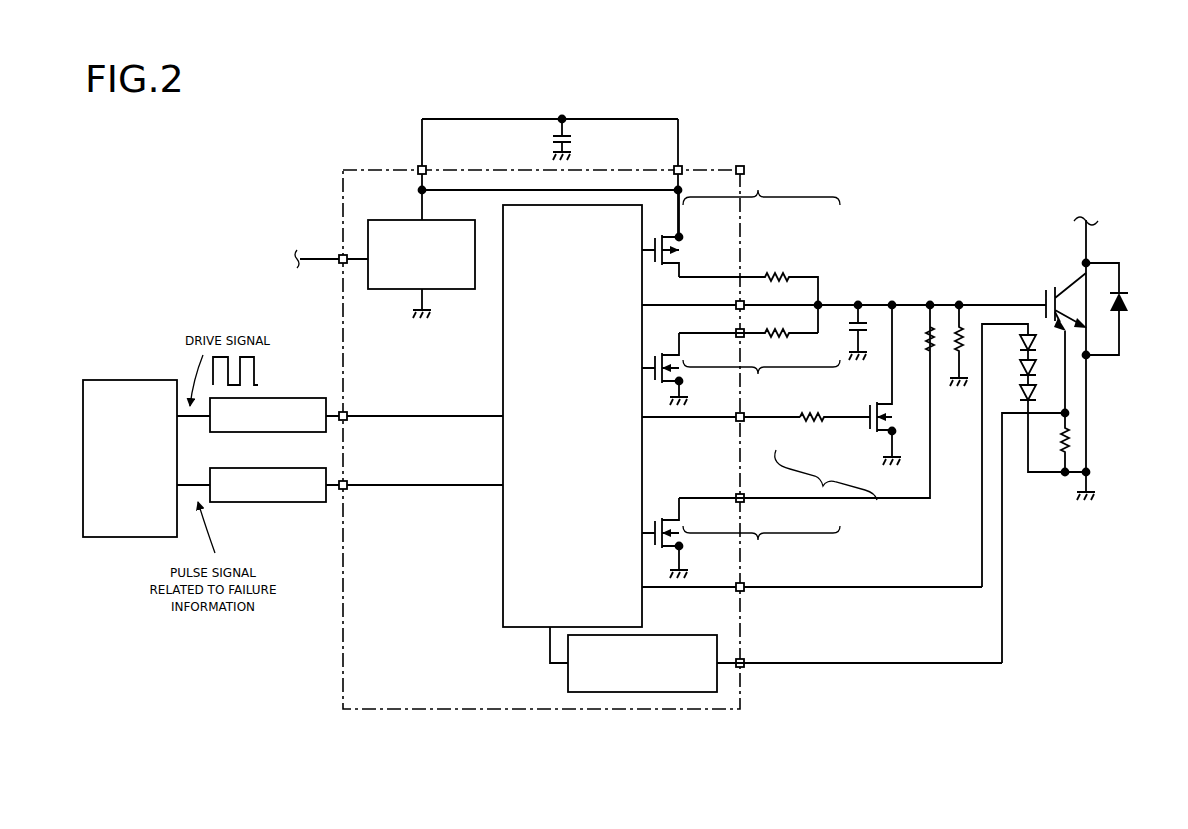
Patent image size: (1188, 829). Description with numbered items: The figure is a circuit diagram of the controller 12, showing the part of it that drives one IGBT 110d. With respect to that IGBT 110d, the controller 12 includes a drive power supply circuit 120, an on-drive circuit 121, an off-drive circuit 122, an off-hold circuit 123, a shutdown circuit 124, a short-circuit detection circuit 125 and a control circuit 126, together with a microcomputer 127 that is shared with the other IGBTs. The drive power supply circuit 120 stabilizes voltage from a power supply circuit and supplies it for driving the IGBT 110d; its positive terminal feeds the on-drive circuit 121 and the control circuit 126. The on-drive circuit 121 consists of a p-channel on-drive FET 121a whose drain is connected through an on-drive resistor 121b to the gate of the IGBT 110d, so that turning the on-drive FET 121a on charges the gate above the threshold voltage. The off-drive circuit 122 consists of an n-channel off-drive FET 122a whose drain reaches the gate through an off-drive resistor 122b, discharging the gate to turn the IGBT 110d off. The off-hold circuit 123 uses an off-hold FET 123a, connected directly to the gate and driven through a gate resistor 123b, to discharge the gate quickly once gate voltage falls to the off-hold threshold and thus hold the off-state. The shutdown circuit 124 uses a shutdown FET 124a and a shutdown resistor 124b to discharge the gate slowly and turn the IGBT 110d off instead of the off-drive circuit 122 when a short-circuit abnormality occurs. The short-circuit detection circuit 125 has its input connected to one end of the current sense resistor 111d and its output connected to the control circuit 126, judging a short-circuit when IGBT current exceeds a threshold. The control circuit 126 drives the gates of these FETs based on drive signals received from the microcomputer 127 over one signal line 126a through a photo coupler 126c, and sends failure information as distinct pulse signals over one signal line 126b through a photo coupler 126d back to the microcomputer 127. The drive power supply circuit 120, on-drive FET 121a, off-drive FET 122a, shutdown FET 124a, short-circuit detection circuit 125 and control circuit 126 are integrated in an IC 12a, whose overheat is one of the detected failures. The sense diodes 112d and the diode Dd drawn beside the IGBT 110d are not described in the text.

The controller 12 is at (732, 132).
The IC 12a is at (392, 712).
The drive power supply circuit 120 is at (409, 221).
The on-drive circuit 121 is at (747, 249).
The on-drive FET 121a is at (681, 259).
The on-drive resistor 121b is at (782, 272).
The off-drive circuit 122 is at (747, 367).
The off-drive FET 122a is at (710, 363).
The off-drive resistor 122b is at (775, 340).
The off-hold circuit 123 is at (838, 401).
The off-hold FET 123a is at (866, 437).
The gate resistor 123b is at (811, 425).
The shutdown circuit 124 is at (794, 417).
The shutdown FET 124a is at (708, 526).
The shutdown resistor 124b is at (927, 326).
The short-circuit detection circuit 125 is at (665, 633).
The control circuit 126 is at (502, 581).
The signal line 126a is at (417, 413).
The signal line 126b is at (417, 483).
The photo coupler 126c is at (286, 396).
The photo coupler 126d is at (258, 503).
The microcomputer 127 is at (133, 378).
The IGBT 110d is at (1050, 286).
The current sense resistor 111d is at (1062, 438).
The temperature sensing diodes 112d is at (1038, 343).
The freewheel diode Dd is at (1130, 305).